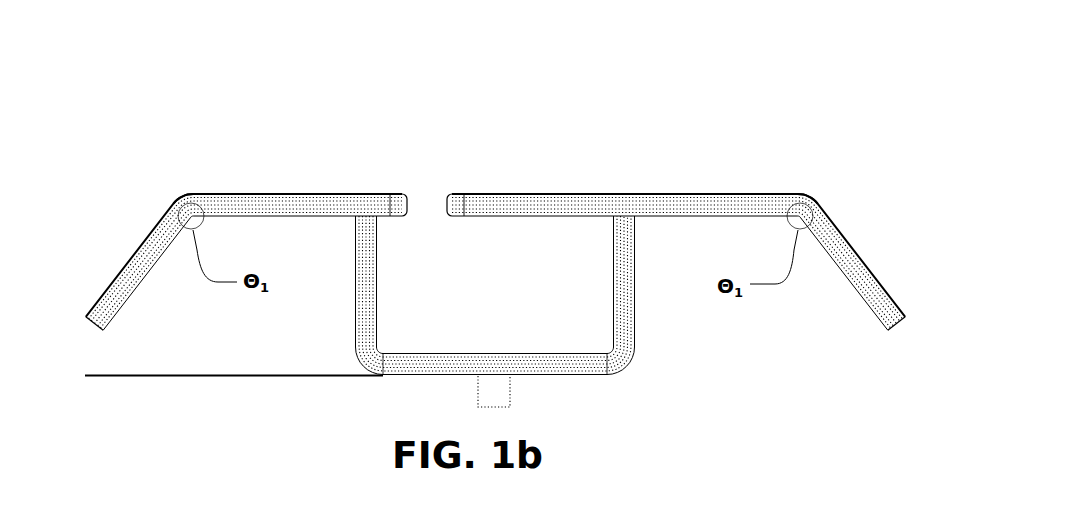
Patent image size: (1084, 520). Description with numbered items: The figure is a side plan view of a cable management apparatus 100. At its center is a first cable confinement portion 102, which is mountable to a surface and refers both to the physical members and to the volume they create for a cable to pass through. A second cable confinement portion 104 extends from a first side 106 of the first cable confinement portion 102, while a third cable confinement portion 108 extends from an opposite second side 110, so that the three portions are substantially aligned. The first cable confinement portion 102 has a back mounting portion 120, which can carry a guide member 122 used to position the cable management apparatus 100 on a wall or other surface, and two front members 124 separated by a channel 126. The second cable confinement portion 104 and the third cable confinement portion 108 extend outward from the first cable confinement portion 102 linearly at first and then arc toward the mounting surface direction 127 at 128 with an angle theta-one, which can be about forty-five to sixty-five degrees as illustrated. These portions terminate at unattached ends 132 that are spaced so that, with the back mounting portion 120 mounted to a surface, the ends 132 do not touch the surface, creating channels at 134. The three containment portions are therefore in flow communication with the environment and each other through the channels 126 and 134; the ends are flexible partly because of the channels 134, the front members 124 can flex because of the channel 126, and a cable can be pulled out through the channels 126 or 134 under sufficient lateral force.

The cable management apparatus 100 is at (679, 118).
The first cable confinement portion 102 is at (437, 352).
The second cable confinement portion 104 is at (674, 194).
The first side 106 is at (629, 277).
The third cable confinement portion 108 is at (270, 200).
The second side 110 is at (357, 293).
The back mounting portion 120 is at (582, 380).
The guide member 122 is at (500, 387).
The front members 124 is at (465, 193).
The channel 126 is at (428, 182).
The mounting surface direction 127 is at (259, 395).
The arc 128 is at (177, 194).
The unattached ends 132 is at (100, 336).
The channels 134 is at (92, 356).